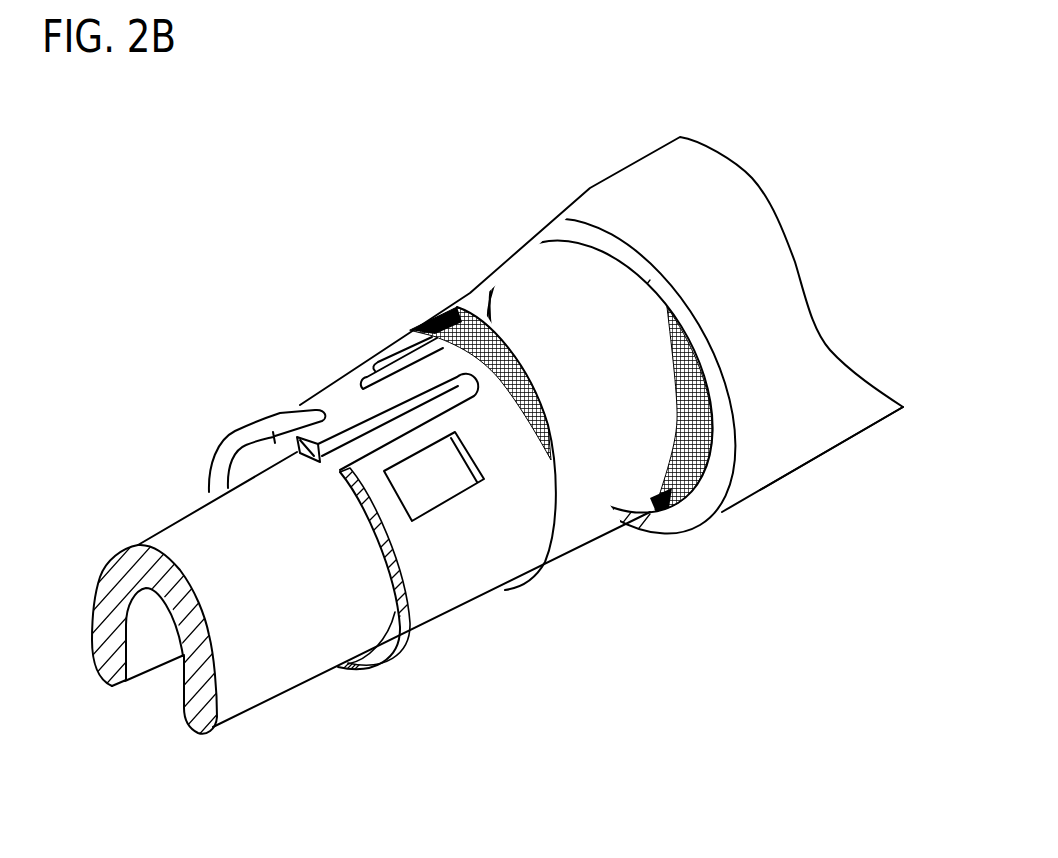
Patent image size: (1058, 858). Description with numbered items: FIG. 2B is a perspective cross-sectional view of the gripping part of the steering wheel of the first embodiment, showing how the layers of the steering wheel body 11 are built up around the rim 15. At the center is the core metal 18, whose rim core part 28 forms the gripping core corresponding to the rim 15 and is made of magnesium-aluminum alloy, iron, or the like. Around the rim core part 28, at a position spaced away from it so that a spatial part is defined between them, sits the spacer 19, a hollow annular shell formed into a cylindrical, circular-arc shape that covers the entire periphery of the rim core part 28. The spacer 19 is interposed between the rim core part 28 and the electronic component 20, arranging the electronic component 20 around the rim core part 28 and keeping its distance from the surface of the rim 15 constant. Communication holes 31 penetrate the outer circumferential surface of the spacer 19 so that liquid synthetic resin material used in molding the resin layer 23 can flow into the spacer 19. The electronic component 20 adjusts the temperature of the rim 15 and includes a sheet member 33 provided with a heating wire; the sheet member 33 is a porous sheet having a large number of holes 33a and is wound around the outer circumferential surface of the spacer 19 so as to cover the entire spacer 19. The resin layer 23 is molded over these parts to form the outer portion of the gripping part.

The steering wheel body 11 is at (627, 151).
The rim 15 is at (592, 203).
The core metal 18 is at (257, 692).
The spacer 19 is at (492, 586).
The electronic component 20 is at (566, 548).
The resin layer 23 is at (792, 455).
The rim core part 28 is at (181, 528).
The communication hole 31 is at (288, 418).
The sheet member 33 is at (599, 525).
The holes 33a is at (470, 312).